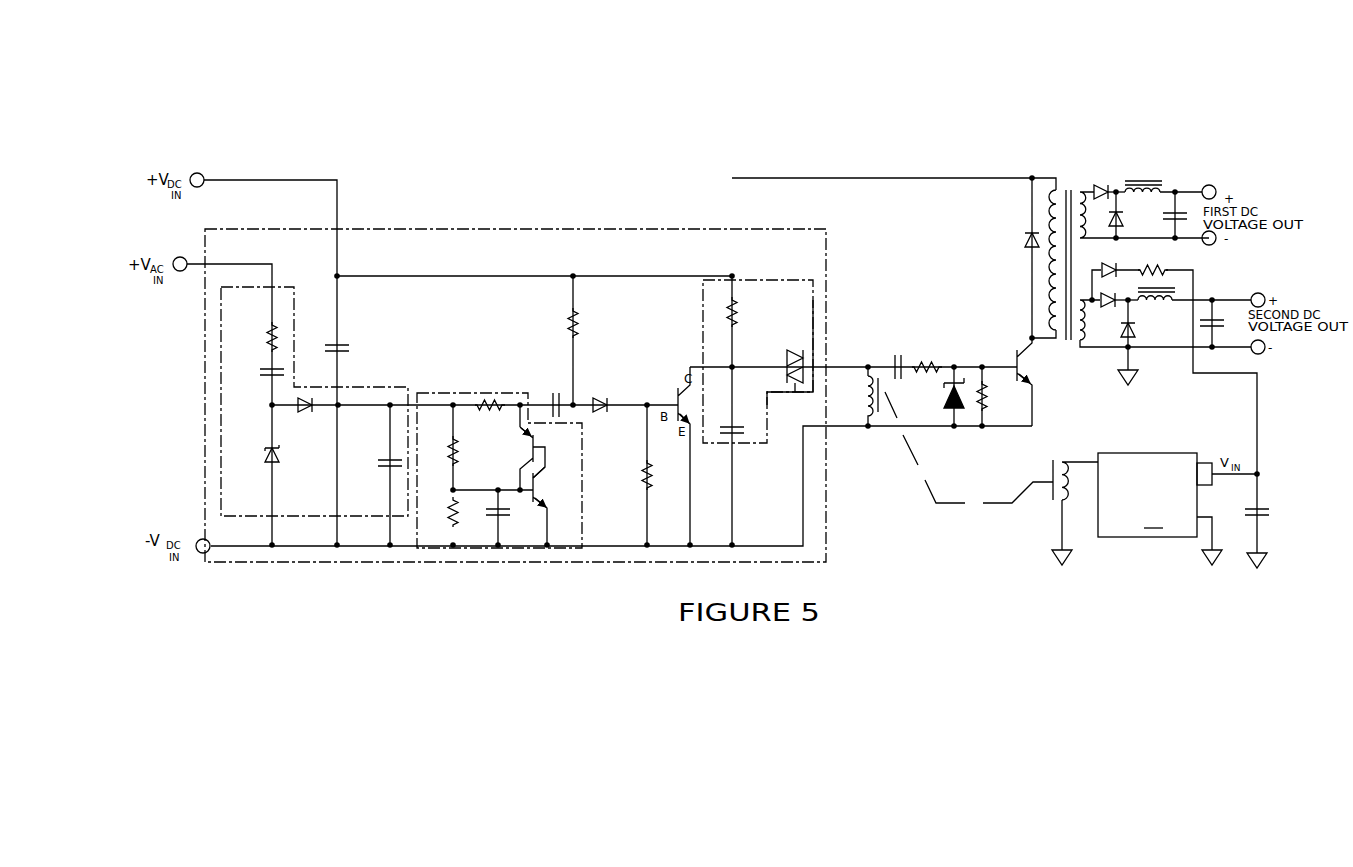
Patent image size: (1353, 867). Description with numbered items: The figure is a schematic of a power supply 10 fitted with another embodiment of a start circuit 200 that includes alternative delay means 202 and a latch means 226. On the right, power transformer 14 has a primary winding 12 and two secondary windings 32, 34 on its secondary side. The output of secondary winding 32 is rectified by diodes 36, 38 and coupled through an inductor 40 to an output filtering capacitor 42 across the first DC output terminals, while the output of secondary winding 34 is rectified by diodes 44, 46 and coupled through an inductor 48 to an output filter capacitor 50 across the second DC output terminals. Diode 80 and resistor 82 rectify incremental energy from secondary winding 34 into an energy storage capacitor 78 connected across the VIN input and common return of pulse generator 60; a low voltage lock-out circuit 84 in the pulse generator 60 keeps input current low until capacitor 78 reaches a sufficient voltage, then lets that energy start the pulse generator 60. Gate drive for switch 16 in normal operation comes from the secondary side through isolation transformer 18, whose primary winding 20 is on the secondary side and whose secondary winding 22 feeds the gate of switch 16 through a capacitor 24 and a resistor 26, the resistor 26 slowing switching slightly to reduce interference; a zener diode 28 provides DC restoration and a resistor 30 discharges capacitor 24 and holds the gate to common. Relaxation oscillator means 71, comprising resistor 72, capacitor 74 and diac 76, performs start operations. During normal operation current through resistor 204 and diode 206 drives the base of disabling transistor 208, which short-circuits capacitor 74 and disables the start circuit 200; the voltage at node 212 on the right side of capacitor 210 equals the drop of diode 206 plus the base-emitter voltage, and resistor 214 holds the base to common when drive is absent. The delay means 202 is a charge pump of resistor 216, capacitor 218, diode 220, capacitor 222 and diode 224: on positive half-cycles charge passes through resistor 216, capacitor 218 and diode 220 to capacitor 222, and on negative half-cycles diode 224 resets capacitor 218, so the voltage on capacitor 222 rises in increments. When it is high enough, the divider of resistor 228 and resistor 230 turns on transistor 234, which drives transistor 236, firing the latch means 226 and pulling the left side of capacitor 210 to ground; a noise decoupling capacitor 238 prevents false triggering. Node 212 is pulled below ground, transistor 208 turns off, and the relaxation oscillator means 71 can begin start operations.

The power supply 10 is at (884, 97).
The start circuit 200 is at (500, 223).
The alternative delay means 202 is at (289, 282).
The resistor 216 is at (266, 331).
The capacitor 218 is at (260, 379).
The diode 220 is at (303, 415).
The capacitor 222 is at (383, 458).
The diode 224 is at (280, 462).
The latch means 226 is at (457, 390).
The resistor 228 is at (458, 444).
The resistor 230 is at (449, 508).
The transistor 234 is at (542, 490).
The transistor 236 is at (528, 452).
The noise decoupling capacitor 238 is at (509, 516).
The capacitor 210 is at (548, 394).
The node 212 is at (578, 400).
The diode 206 is at (602, 414).
The resistor 204 is at (585, 323).
The resistor 214 is at (641, 477).
The disabling transistor 208 is at (672, 397).
The relaxation oscillator means 71 is at (699, 336).
The resistor 72 is at (726, 311).
The capacitor 74 is at (740, 428).
The diac 76 is at (789, 352).
The secondary winding 22 is at (863, 387).
The capacitor 24 is at (898, 352).
The resistor 26 is at (933, 358).
The zener diode 28 is at (949, 394).
The resistor 30 is at (991, 394).
The switch 16 is at (1016, 352).
The isolation transformer 18 is at (1050, 467).
The primary winding 20 is at (1055, 532).
The primary winding 12 is at (1053, 223).
The power transformer 14 is at (1064, 186).
The secondary winding 32 is at (1081, 186).
The secondary winding 34 is at (1083, 298).
The diode 36 is at (1100, 186).
The diode 38 is at (1122, 223).
The inductor 40 is at (1145, 180).
The output filtering capacitor 42 is at (1162, 212).
The diode 44 is at (1115, 309).
The diode 46 is at (1119, 338).
The inductor 48 is at (1168, 307).
The output filter capacitor 50 is at (1216, 322).
The diode 80 is at (1116, 260).
The resistor 82 is at (1166, 268).
The low voltage lock-out circuit 84 is at (1215, 461).
The capacitor 78 is at (1268, 514).
The pulse generator 60 is at (1160, 509).